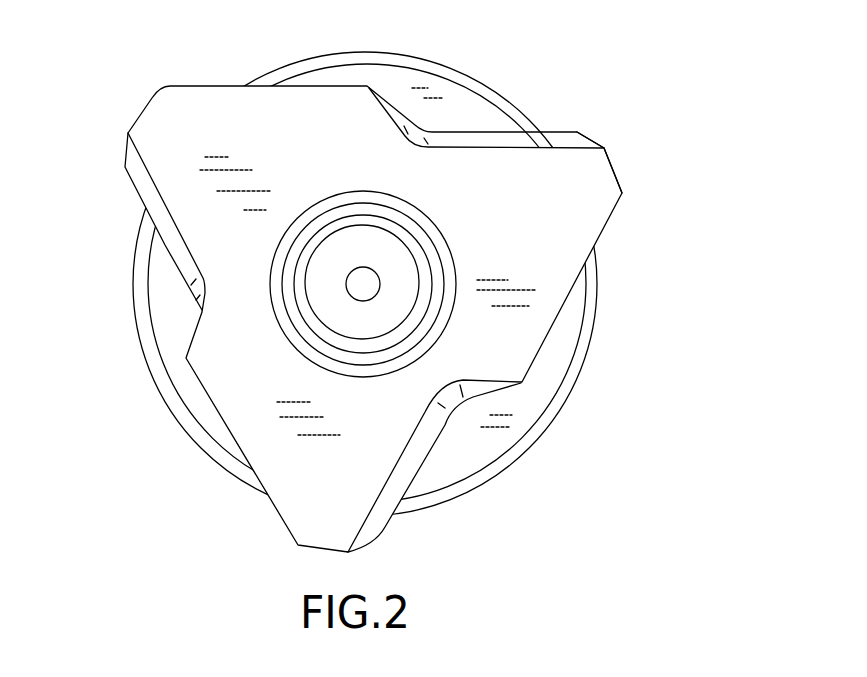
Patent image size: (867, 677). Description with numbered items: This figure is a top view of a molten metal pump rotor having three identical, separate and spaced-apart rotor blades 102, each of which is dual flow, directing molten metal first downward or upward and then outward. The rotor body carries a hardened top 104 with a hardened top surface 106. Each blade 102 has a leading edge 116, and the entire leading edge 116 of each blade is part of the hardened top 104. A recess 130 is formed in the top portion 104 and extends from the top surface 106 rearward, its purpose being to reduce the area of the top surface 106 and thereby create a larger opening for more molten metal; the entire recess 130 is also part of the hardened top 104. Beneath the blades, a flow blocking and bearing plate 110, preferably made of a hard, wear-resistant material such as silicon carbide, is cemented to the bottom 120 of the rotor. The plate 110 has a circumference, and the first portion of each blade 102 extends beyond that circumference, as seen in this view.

The rotor blade 102 is at (189, 73).
The hardened top 104 is at (546, 178).
The top surface 106 is at (295, 122).
The flow blocking and bearing plate 110 is at (601, 357).
The leading edge 116 is at (246, 86).
The bottom 120 is at (165, 310).
The recess 130 is at (485, 138).